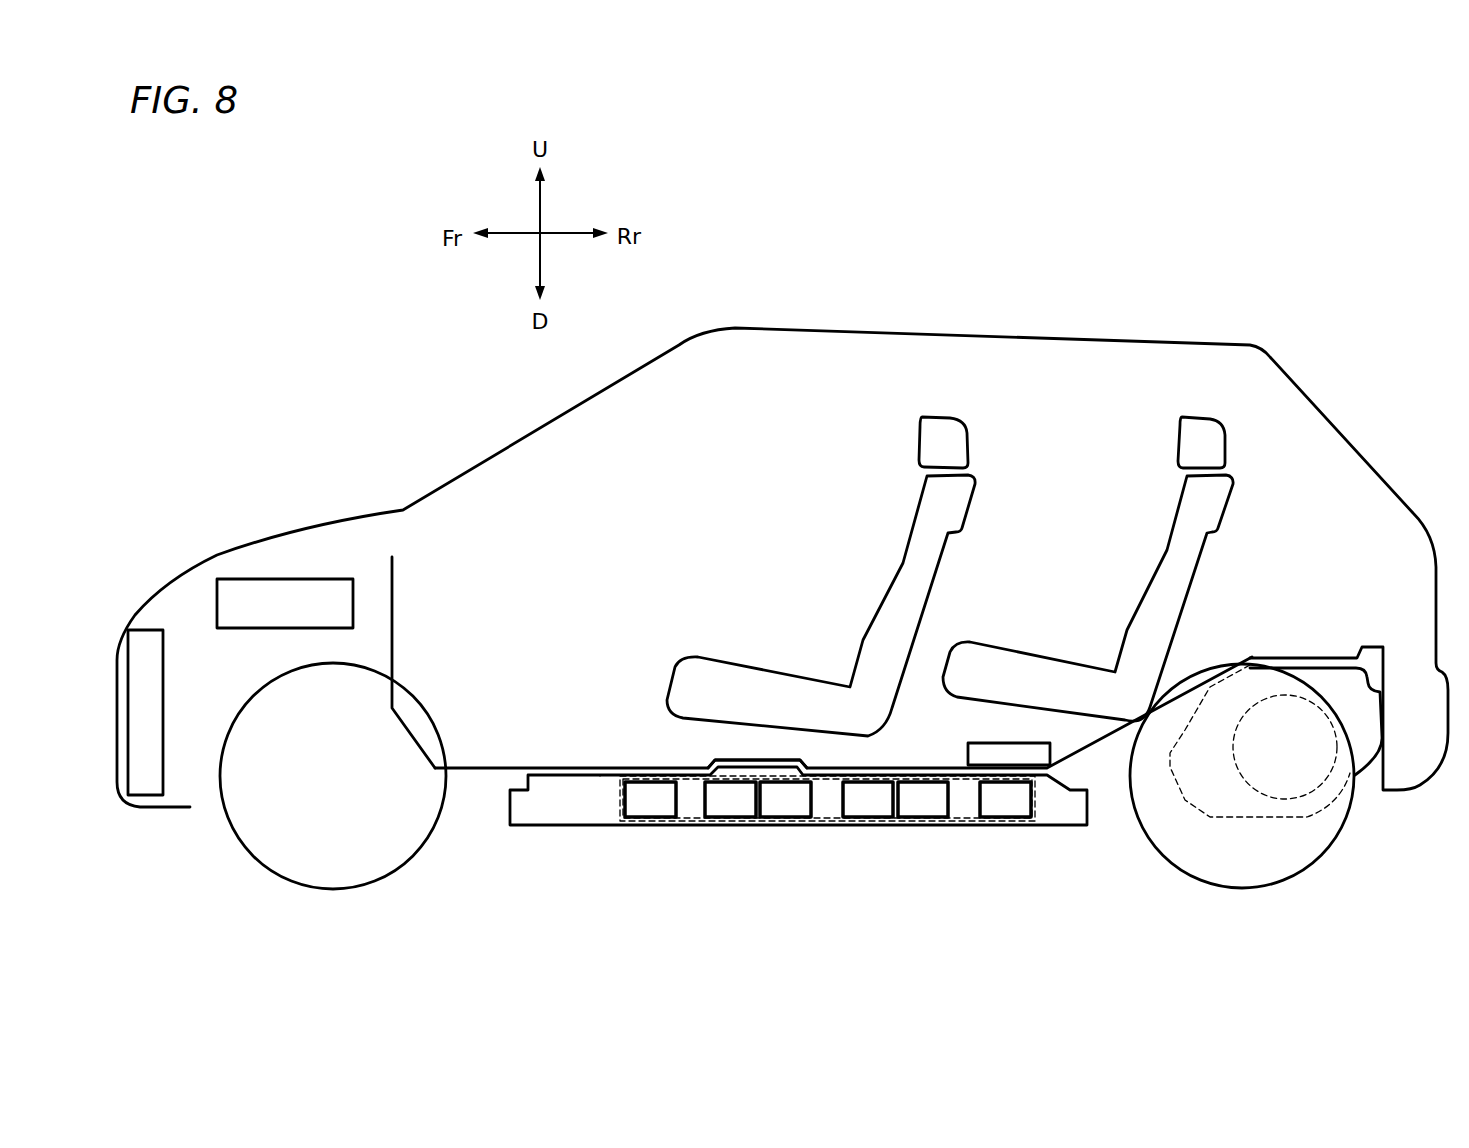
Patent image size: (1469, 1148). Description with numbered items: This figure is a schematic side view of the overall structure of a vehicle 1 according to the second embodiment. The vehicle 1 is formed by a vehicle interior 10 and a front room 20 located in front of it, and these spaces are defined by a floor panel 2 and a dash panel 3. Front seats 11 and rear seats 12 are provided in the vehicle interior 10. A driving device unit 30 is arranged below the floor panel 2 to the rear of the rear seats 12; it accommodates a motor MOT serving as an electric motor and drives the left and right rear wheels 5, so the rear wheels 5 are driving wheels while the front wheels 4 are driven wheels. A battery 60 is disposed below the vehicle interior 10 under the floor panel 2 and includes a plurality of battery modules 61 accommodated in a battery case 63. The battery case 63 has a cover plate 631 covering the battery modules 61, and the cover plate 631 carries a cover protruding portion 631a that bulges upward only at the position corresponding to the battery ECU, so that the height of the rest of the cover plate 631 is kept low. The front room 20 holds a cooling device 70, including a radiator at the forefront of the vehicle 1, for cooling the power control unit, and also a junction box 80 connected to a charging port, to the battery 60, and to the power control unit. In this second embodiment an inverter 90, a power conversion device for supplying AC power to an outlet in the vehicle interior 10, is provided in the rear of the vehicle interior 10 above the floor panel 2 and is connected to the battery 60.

The vehicle 1 is at (388, 333).
The floor panel 2 is at (508, 768).
The dash panel 3 is at (392, 597).
The front wheels 4 is at (428, 843).
The rear wheels 5 is at (1333, 842).
The vehicle interior 10 is at (758, 457).
The front seats 11 is at (900, 560).
The rear seats 12 is at (1165, 552).
The front room 20 is at (314, 562).
The driving device unit 30 is at (1367, 763).
The battery 60 is at (665, 830).
The battery modules 61 is at (917, 807).
The battery case 63 is at (960, 827).
The cover plate 631 is at (612, 775).
The cover protruding portion 631a is at (755, 767).
The cooling device 70 is at (143, 630).
The junction box 80 is at (250, 592).
The inverter 90 is at (1010, 743).
The motor MOT is at (1293, 798).